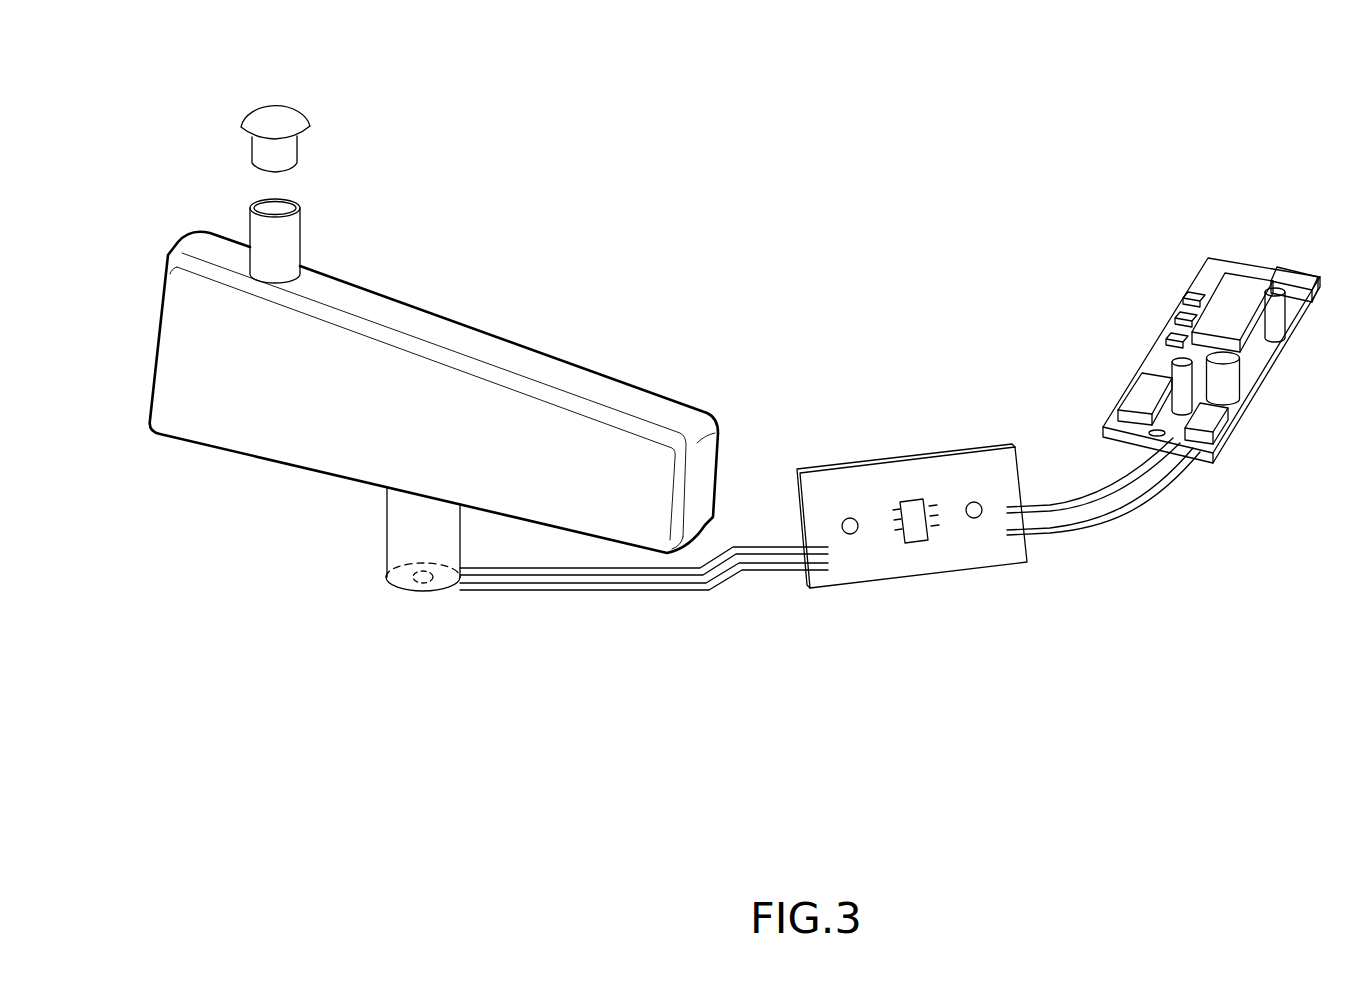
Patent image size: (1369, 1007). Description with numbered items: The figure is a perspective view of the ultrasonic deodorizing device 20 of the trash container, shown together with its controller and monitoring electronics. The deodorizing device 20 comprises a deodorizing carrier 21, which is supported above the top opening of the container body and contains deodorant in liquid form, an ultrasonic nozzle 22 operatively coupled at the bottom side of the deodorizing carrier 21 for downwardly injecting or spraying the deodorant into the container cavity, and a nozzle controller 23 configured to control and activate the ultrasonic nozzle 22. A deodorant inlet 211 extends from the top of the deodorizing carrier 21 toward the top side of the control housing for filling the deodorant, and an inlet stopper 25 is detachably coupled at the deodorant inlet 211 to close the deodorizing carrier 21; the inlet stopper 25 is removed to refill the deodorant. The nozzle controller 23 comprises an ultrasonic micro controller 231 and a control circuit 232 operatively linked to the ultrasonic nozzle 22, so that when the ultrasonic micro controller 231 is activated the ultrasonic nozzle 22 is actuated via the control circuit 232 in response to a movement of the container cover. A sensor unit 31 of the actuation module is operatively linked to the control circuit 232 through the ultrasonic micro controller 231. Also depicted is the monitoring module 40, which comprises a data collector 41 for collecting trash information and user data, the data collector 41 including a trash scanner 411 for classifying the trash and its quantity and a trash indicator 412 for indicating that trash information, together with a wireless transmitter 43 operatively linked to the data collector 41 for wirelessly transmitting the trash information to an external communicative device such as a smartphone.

The deodorizing device 20 is at (312, 663).
The deodorizing carrier 21 is at (272, 437).
The deodorant inlet 211 is at (292, 250).
The ultrasonic nozzle 22 is at (387, 572).
The inlet stopper 25 is at (280, 127).
The nozzle controller 23 is at (953, 648).
The ultrasonic micro controller 231 is at (1210, 415).
The control circuit 232 is at (867, 557).
The monitoring module 40 is at (1033, 322).
The data collector 41 is at (1073, 243).
The trash scanner 411 is at (1222, 357).
The trash indicator 412 is at (1180, 370).
The wireless transmitter 43 is at (1147, 393).
The sensor unit 31 is at (1235, 285).